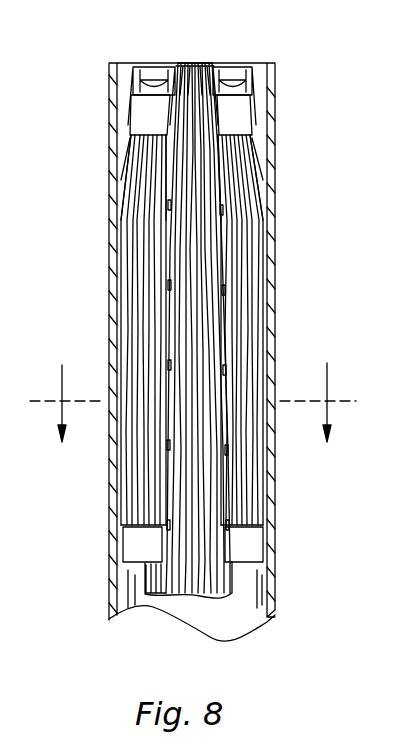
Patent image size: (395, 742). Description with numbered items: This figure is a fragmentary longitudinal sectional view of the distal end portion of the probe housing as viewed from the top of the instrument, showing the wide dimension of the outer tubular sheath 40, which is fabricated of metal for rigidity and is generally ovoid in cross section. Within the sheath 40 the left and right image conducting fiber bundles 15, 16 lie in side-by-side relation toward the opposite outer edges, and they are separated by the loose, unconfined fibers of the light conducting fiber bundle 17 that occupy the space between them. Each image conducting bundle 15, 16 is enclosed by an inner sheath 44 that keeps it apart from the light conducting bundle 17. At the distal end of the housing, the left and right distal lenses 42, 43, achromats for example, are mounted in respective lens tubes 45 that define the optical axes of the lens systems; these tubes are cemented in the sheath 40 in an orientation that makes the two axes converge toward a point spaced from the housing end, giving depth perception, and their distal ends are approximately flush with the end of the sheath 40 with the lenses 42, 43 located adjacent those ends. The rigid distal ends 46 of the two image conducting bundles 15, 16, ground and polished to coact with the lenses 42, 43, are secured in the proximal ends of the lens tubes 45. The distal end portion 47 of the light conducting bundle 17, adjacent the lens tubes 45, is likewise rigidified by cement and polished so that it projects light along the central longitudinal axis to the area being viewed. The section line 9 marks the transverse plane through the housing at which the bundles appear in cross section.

The section line 9- 9 is at (193, 402).
The left image conducting fiber bundle 15 is at (136, 456).
The right image conducting fiber bundle 16 is at (245, 481).
The light conducting fiber bundle 17 is at (200, 306).
The tubular sheath 40 is at (110, 293).
The left distal lens 42 is at (155, 70).
The right distal lens 43 is at (233, 70).
The inner sheath 44 is at (140, 541).
The lens tube 45 is at (150, 114).
The rigid distal end of image conducting bundle 46 is at (140, 166).
The distal end portion of light conducting bundle 47 is at (190, 70).